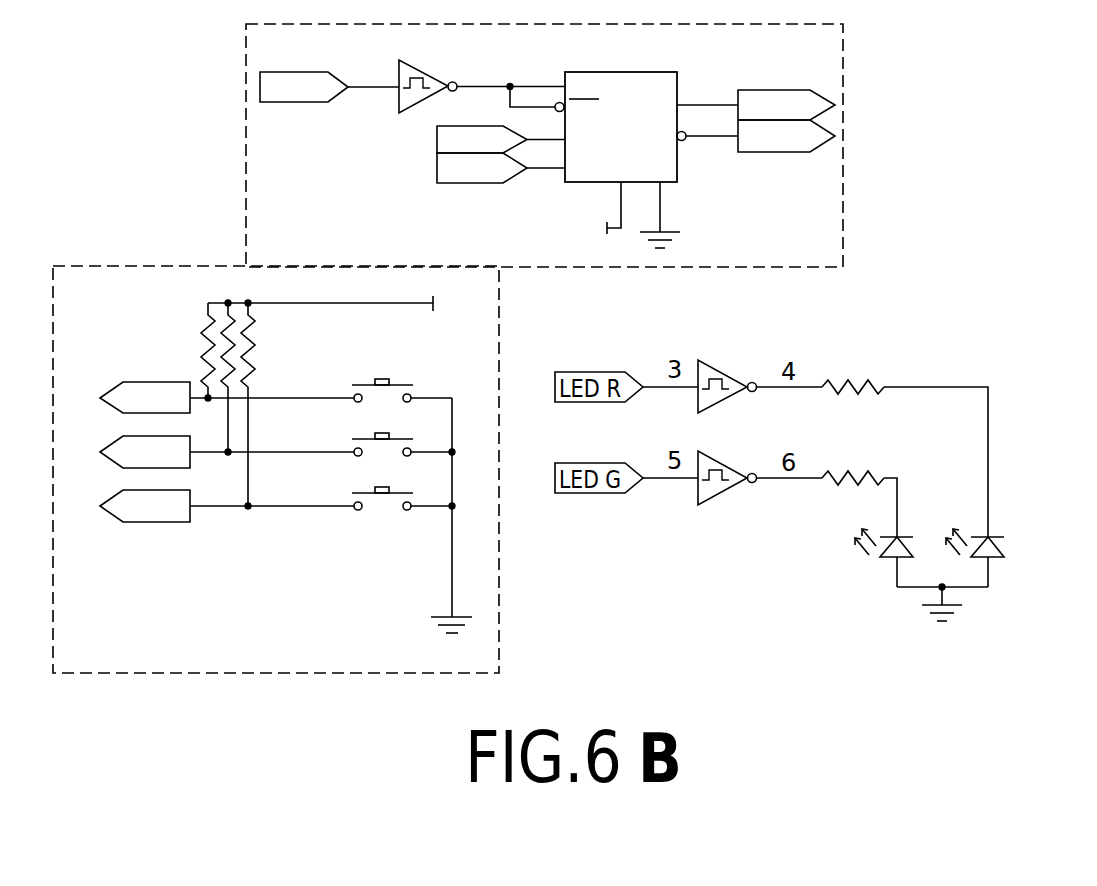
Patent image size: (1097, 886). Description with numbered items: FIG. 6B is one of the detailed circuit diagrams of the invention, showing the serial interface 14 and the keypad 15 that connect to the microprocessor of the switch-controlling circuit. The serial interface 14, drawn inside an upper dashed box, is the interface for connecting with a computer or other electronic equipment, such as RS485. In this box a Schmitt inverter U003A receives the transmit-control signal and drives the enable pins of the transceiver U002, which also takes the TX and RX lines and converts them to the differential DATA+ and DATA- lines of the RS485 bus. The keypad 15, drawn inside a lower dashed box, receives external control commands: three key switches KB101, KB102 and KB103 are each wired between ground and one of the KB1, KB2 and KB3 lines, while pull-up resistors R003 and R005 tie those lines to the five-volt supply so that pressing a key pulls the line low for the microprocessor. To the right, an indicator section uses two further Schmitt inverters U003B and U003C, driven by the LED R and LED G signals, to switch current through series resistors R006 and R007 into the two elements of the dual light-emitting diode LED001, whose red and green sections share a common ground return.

The serial interface 14 is at (590, 145).
The keypad 15 is at (334, 469).
The Schmitt inverter 74LS14 U003A is at (403, 90).
The RS-485 transceiver DS75176 U002 is at (549, 123).
The pull-up resistor 10K R003 is at (136, 350).
The pull-up resistors 10K R005 is at (200, 404).
The key switch KB101 is at (378, 376).
The key switch KB102 is at (378, 431).
The key switch KB103 is at (378, 485).
The Schmitt inverter 74LS14 U003B is at (749, 379).
The Schmitt inverter 74LS14 U003C is at (751, 472).
The LED series resistor 330 R006 is at (853, 382).
The LED series resistor 330 R007 is at (853, 473).
The dual LED indicator LED001 is at (939, 515).